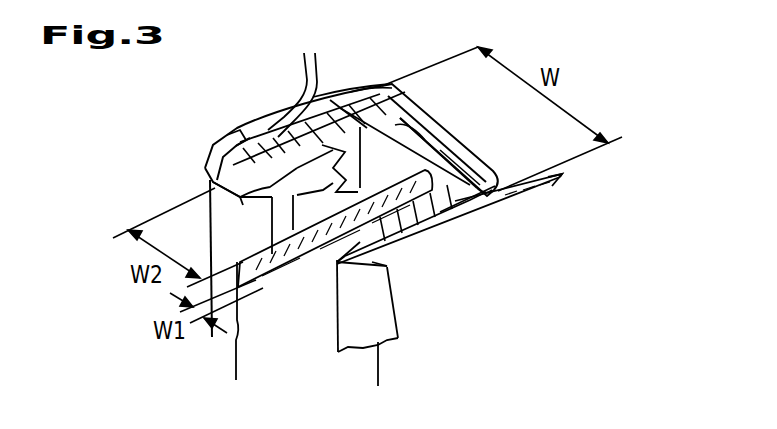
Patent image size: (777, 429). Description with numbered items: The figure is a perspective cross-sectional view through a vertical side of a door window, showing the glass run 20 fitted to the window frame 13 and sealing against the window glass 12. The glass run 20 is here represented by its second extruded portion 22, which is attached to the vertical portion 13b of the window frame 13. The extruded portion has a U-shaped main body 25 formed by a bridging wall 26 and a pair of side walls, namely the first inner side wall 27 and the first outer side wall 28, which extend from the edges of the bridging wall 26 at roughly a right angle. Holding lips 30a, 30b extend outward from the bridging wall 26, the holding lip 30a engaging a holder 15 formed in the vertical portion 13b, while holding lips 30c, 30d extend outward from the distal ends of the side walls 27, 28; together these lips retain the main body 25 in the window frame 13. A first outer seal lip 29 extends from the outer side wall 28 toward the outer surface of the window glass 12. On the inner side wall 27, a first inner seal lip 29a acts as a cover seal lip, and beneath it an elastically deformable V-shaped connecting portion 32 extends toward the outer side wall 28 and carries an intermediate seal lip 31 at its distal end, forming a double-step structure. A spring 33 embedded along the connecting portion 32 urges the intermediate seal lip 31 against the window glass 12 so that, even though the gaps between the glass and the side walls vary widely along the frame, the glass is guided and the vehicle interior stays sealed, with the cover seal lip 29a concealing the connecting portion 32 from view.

The window glass 12 is at (380, 369).
The window frame 13 is at (553, 188).
The vertical portion 13b is at (418, 110).
The holder 15 is at (366, 92).
The glass run 20 is at (200, 155).
The second extruded portion 22 is at (483, 207).
The main body 25 is at (465, 165).
The bridging wall 26 is at (407, 140).
The first inner side wall 27 is at (289, 126).
The first outer side wall 28 is at (441, 232).
The first outer seal lip 29 is at (382, 247).
The first inner seal lip 29a is at (270, 204).
The holding lip 30a is at (338, 100).
The holding lip 30b is at (463, 227).
The holding lip 30c is at (232, 136).
The holding lip 30d is at (387, 270).
The intermediate seal lip 31 is at (272, 238).
The connecting portion 32 is at (360, 165).
The spring 33 is at (320, 171).